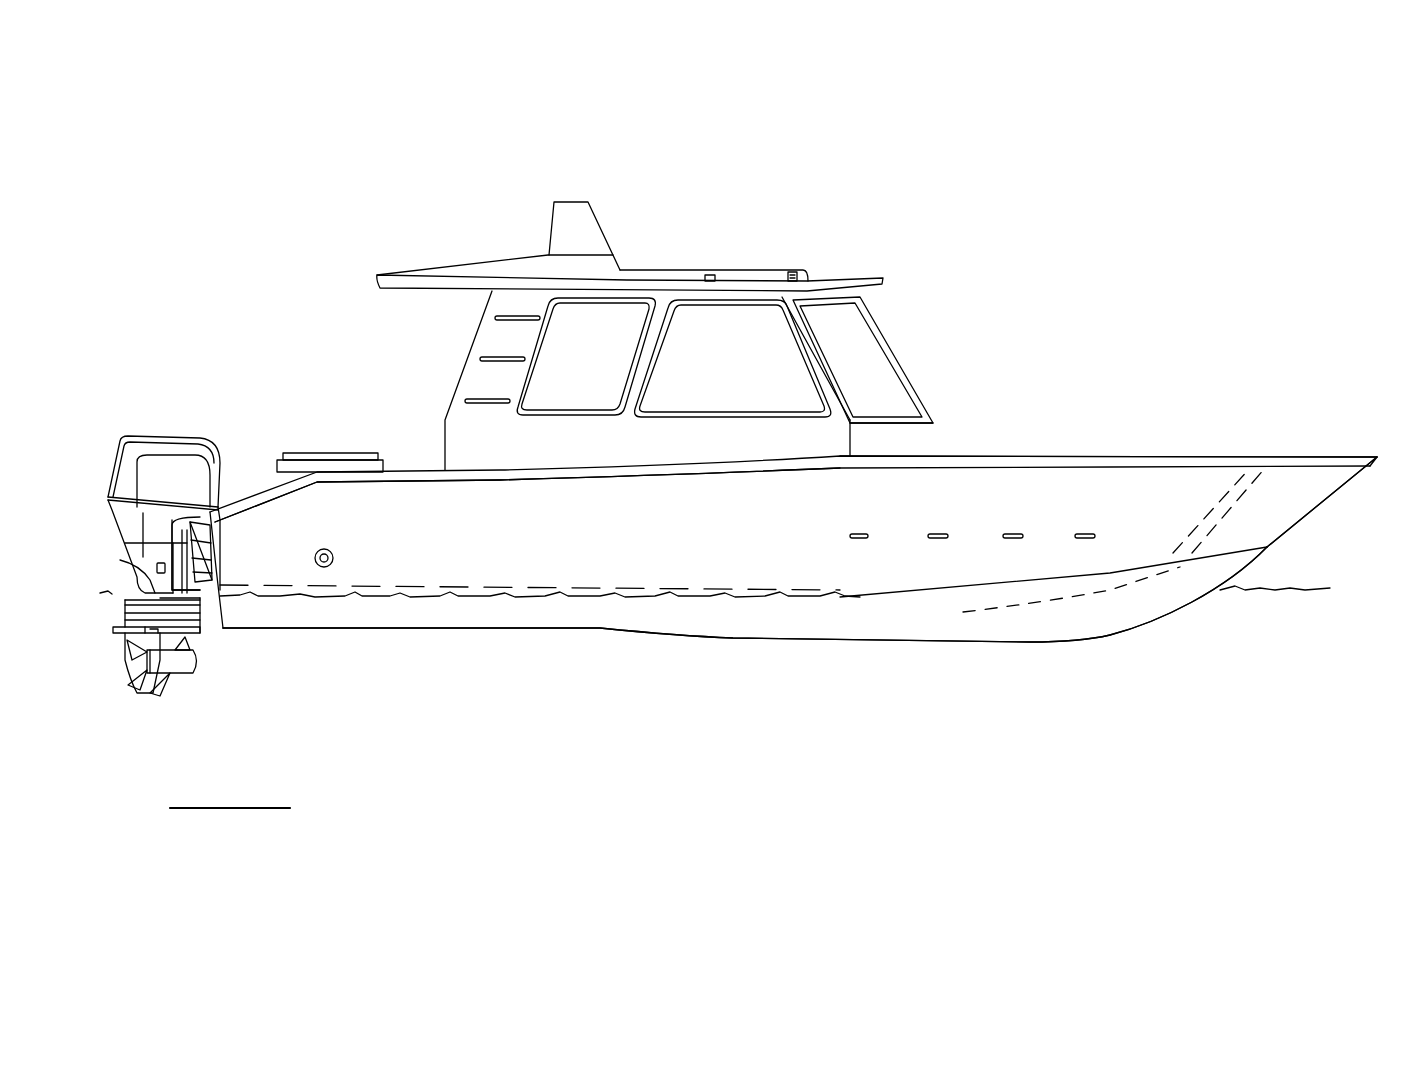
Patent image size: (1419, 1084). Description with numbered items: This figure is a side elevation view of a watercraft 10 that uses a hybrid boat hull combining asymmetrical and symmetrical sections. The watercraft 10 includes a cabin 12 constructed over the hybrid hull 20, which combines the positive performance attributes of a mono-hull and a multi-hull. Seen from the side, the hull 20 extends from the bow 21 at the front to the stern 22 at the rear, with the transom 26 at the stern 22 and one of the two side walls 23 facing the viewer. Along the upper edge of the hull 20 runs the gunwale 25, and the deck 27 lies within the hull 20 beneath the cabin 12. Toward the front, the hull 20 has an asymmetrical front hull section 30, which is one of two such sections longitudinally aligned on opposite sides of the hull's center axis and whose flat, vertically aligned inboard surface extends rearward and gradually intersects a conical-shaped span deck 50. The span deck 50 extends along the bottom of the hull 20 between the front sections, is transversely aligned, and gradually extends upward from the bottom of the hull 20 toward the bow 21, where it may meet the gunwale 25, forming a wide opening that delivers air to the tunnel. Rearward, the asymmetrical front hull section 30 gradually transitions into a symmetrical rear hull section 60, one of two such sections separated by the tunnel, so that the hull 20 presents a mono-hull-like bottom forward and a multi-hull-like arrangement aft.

The watercraft 10 is at (273, 235).
The cabin 12 is at (820, 275).
The hull 20 is at (1205, 456).
The bow 21 is at (1356, 404).
The stern 22 is at (245, 423).
The side wall 23 is at (566, 544).
The gunwale 25 is at (945, 455).
The transom 26 is at (200, 596).
The deck 27 is at (372, 583).
The asymmetrical front hull section 30 is at (1152, 625).
The span deck 50 is at (1120, 592).
The symmetrical rear hull section 60 is at (600, 630).